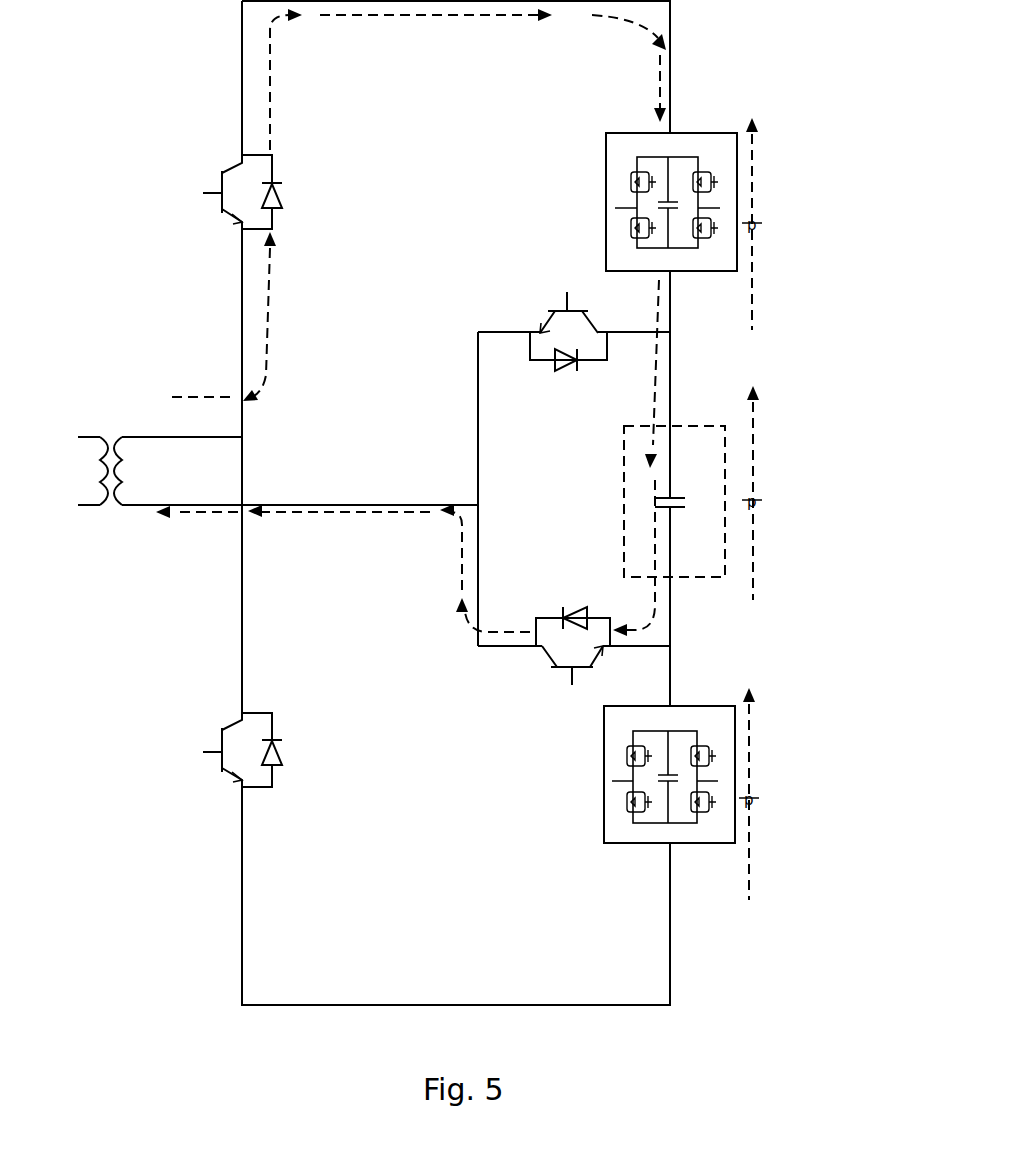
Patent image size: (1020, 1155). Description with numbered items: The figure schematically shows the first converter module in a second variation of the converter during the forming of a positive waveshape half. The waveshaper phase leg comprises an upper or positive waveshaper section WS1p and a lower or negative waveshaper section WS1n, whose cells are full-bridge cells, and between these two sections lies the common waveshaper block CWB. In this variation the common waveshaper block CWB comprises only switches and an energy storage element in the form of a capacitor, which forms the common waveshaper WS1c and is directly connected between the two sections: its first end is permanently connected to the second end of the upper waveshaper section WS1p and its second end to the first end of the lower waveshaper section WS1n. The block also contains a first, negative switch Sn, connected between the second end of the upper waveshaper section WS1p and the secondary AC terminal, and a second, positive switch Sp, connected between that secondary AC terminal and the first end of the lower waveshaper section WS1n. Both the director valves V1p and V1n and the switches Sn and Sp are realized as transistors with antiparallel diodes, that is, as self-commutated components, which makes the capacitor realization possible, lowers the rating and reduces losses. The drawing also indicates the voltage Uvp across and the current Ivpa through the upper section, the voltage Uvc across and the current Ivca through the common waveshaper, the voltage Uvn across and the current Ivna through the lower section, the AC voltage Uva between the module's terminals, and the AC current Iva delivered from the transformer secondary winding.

The director valve V1p is at (218, 192).
The director valve V1n is at (218, 750).
The first switch Sn is at (574, 343).
The second switch Sp is at (574, 646).
The common waveshaper block CWB is at (634, 488).
The upper waveshaper section WS1p is at (602, 202).
The lower waveshaper section WS1n is at (601, 774).
The common waveshaper WS1c is at (722, 577).
The voltage across the upper waveshaper section Uvp is at (567, 180).
The voltage across the lower waveshaper section Uvn is at (574, 855).
The voltage across the common waveshaper Uvc is at (618, 581).
The AC voltage Uva is at (149, 462).
The AC current Iva is at (193, 444).
The current through the upper waveshaper section Ivpa is at (677, 74).
The current through the common waveshaper Ivca is at (663, 368).
The current through the lower waveshaper section Ivna is at (663, 956).